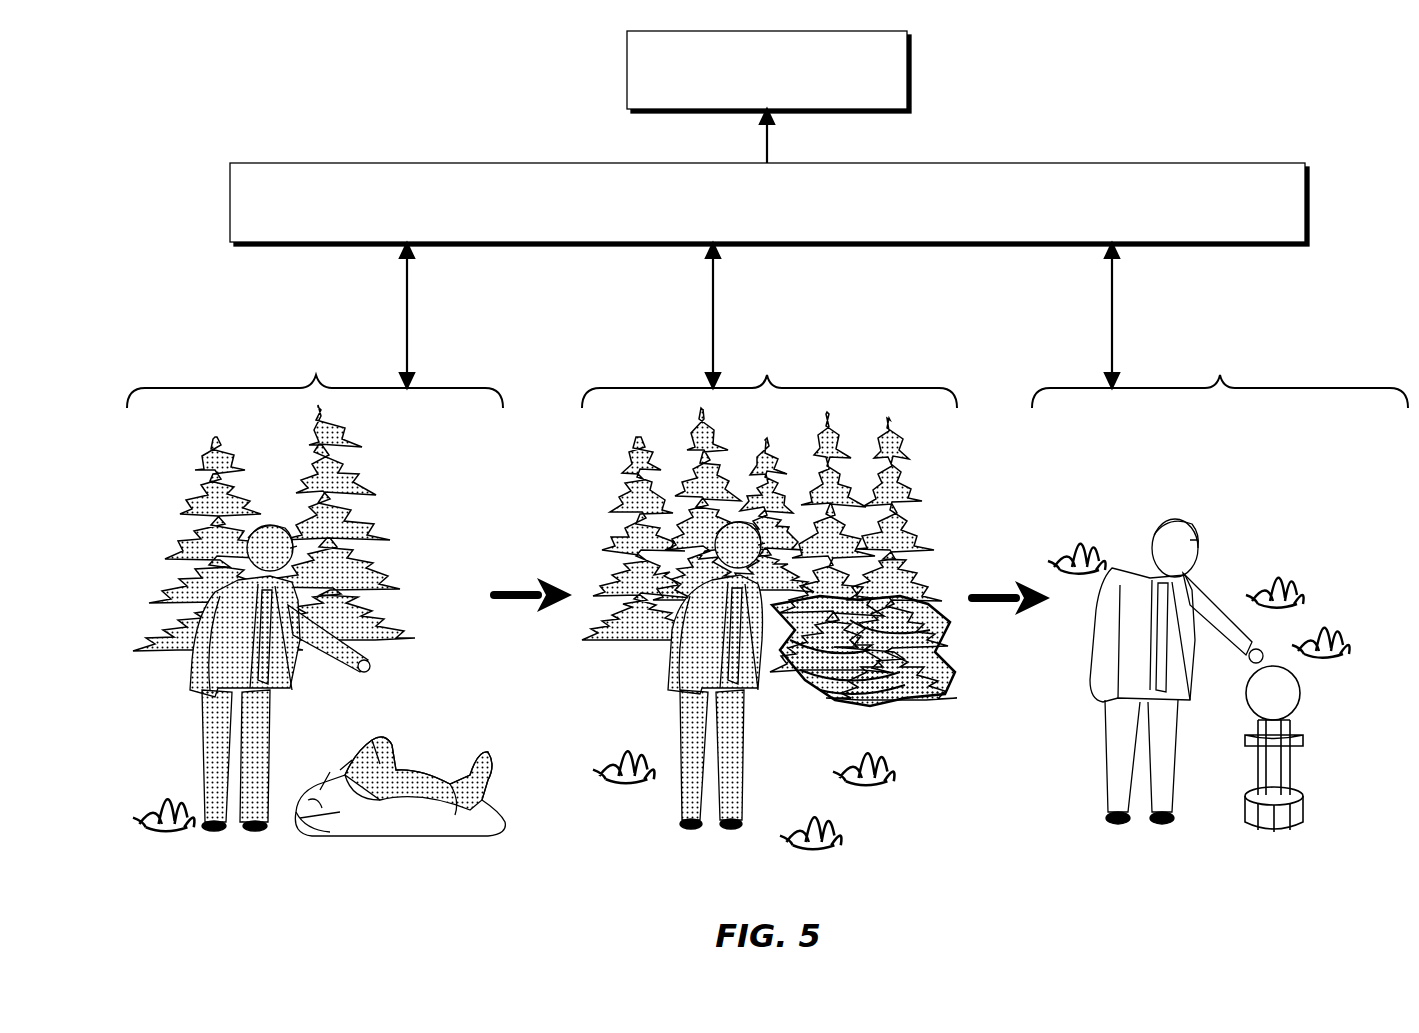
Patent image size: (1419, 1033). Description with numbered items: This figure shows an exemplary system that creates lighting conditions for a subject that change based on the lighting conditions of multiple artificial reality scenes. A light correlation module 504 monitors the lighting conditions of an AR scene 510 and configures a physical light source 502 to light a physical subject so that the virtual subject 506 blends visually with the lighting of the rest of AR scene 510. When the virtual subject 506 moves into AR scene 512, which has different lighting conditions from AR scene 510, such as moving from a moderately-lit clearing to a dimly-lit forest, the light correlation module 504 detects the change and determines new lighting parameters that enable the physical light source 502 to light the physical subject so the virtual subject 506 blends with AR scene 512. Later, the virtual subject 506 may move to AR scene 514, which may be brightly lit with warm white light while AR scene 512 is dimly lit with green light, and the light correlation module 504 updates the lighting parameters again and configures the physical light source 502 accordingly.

The physical light source 502 is at (769, 72).
The light correlation module 504 is at (769, 204).
The virtual subject 506 is at (1316, 516).
The AR scene 510 is at (316, 567).
The AR scene 512 is at (769, 573).
The AR scene 514 is at (1220, 565).